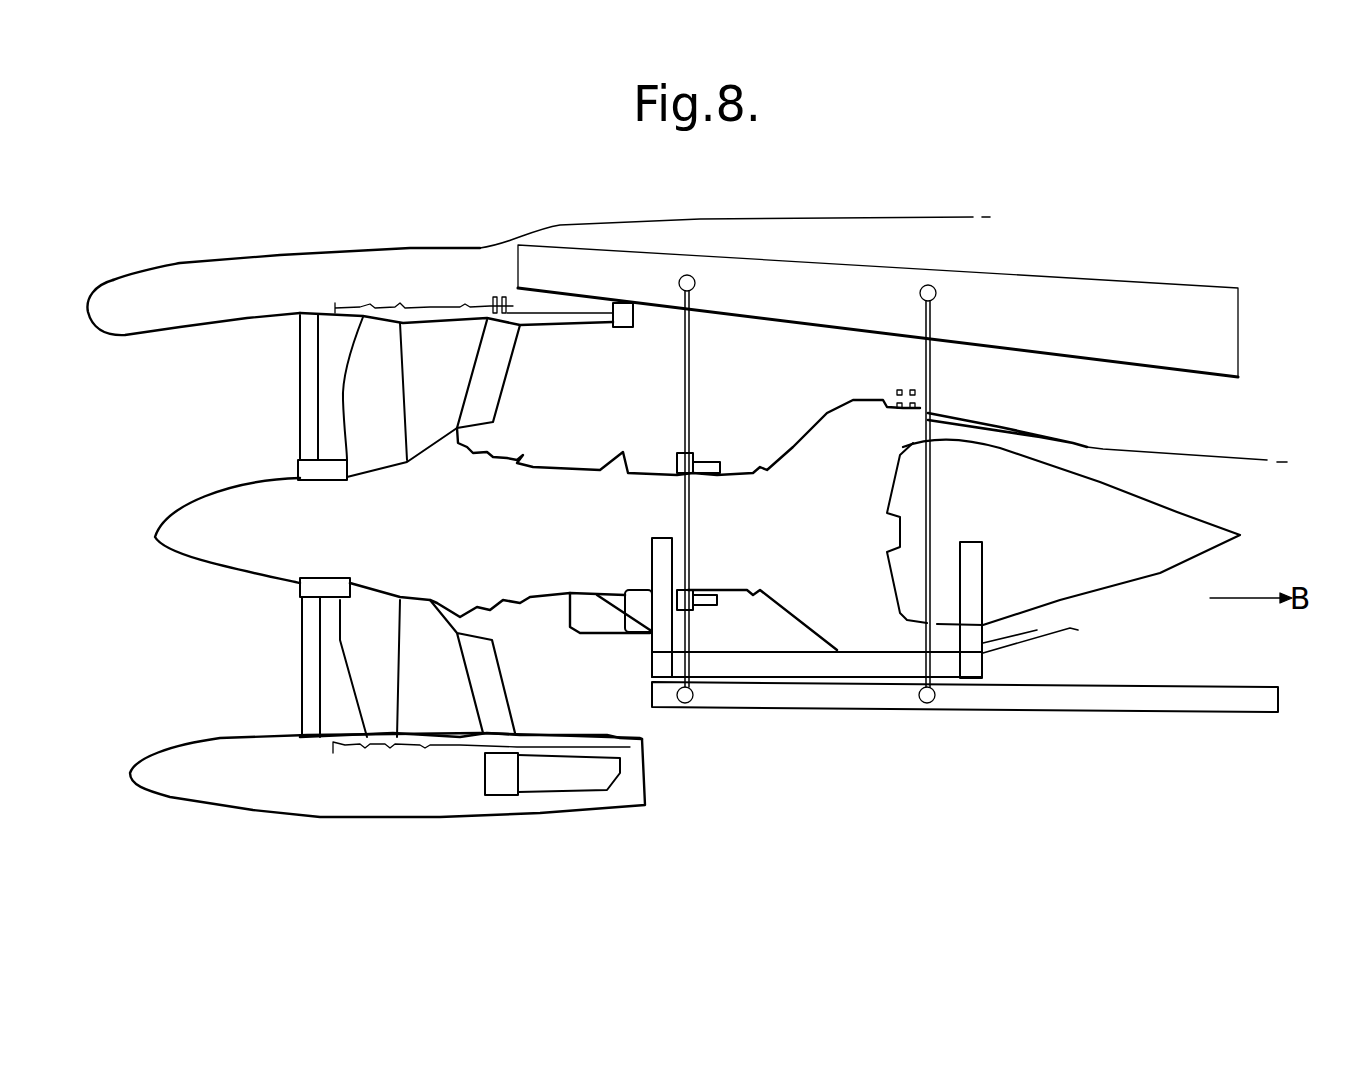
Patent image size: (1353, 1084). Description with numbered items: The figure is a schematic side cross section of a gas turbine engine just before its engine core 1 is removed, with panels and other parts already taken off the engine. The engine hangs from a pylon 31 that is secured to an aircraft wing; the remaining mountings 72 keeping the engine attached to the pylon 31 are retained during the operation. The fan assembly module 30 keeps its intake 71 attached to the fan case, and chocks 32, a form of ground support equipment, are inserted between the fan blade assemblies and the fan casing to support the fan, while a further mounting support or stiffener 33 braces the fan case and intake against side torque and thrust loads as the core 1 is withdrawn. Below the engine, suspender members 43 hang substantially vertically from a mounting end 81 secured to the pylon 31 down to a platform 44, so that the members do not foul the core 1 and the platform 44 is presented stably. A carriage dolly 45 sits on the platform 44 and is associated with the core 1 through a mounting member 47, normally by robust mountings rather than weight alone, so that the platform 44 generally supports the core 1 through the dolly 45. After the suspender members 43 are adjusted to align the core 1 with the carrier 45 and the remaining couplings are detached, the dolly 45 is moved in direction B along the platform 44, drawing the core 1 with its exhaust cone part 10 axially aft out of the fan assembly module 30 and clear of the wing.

The engine core 1 is at (177, 537).
The exhaust cone part 10 is at (1190, 523).
The fan assembly module 30 is at (313, 821).
The pylon 31 is at (1117, 297).
The chocks 32 is at (300, 473).
The mounting support or stiffener 33 is at (623, 307).
The suspender members 43 is at (687, 390).
The platform 44 is at (1230, 707).
The carriage dolly 45 is at (798, 672).
The mounting member 47 is at (973, 575).
The intake 71 is at (213, 278).
The mountings 72 is at (498, 300).
The mounting end 81 is at (687, 277).